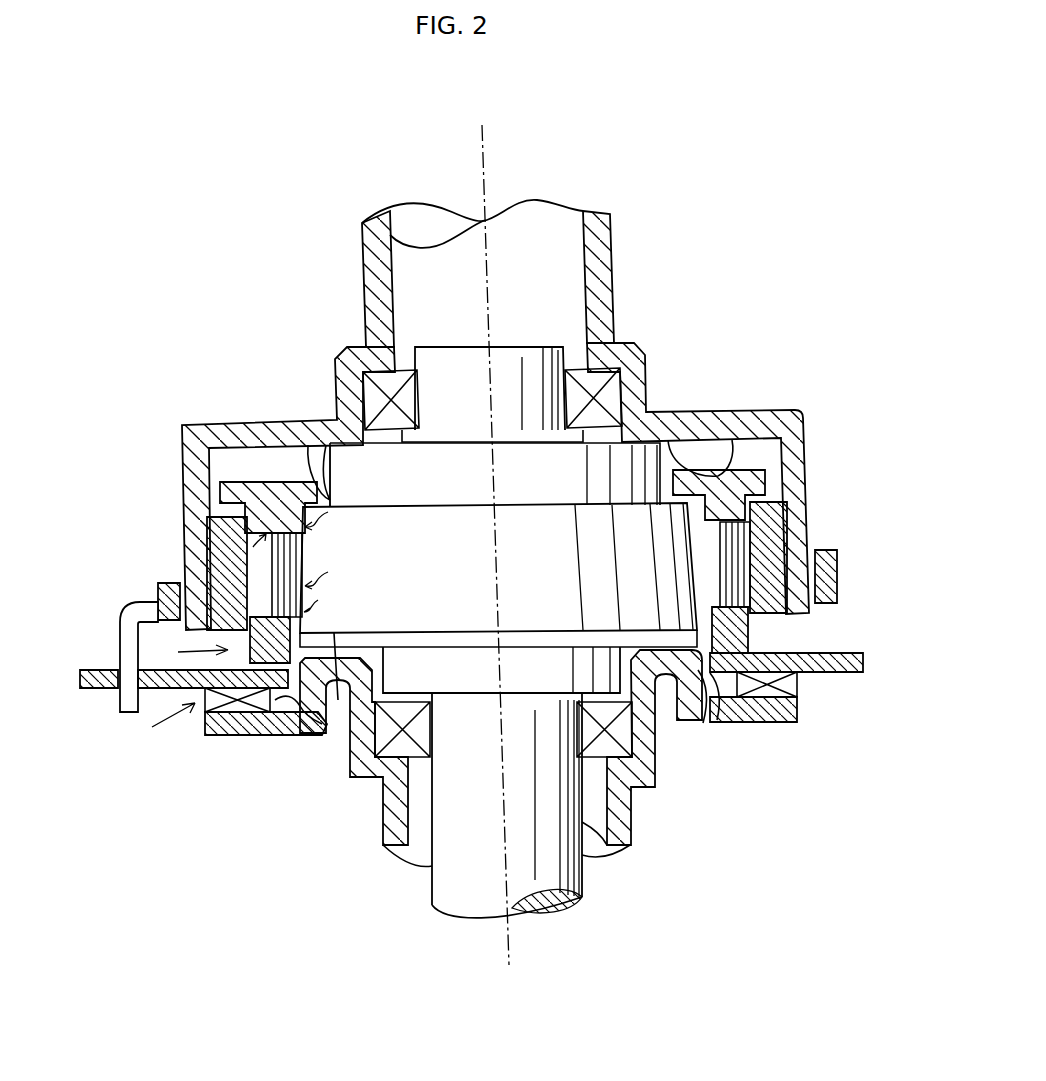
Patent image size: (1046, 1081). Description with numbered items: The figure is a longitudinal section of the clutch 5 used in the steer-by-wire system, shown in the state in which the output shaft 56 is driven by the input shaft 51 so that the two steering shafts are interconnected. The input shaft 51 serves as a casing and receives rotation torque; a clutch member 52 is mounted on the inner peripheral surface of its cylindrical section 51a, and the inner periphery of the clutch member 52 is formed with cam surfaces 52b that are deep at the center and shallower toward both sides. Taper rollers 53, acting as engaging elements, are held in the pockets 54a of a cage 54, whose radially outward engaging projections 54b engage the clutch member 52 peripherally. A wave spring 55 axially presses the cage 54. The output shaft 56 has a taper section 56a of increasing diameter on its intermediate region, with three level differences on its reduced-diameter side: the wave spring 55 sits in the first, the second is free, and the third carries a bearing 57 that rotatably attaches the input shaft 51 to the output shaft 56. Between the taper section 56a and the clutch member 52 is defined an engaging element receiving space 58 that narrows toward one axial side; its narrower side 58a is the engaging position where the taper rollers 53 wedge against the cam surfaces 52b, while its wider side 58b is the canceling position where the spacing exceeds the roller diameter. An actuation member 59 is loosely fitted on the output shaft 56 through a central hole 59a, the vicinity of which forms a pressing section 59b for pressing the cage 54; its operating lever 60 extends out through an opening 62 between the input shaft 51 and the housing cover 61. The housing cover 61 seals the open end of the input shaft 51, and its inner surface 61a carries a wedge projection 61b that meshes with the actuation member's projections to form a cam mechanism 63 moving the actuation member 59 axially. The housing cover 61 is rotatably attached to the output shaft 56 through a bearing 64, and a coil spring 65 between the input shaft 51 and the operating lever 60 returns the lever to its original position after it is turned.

The clutch 5 is at (684, 173).
The input shaft 51 is at (613, 257).
The cylindrical section 51a is at (800, 440).
The clutch member 52 is at (777, 517).
The cam surfaces 52b is at (815, 540).
The taper rollers 53 is at (780, 618).
The cage 54 is at (747, 640).
The pockets 54a is at (228, 548).
The engaging projections 54b is at (773, 482).
The wave spring 55 is at (707, 457).
The output shaft 56 is at (582, 893).
The taper section 56a is at (363, 523).
The bearing 57 is at (613, 387).
The engaging element receiving space 58 is at (270, 576).
The narrower side 58a is at (337, 683).
The wider side 58b is at (235, 498).
The actuation member 59 is at (270, 733).
The hole 59a is at (700, 725).
The pressing section 59b is at (717, 720).
The operating lever 60 is at (85, 672).
The housing cover 61 is at (218, 737).
The inner surface 61a is at (307, 740).
The wedge projection 61b is at (793, 683).
The opening 62 is at (187, 651).
The cam mechanism 63 is at (155, 732).
The bearing 64 is at (383, 820).
The coil spring 65 is at (156, 592).